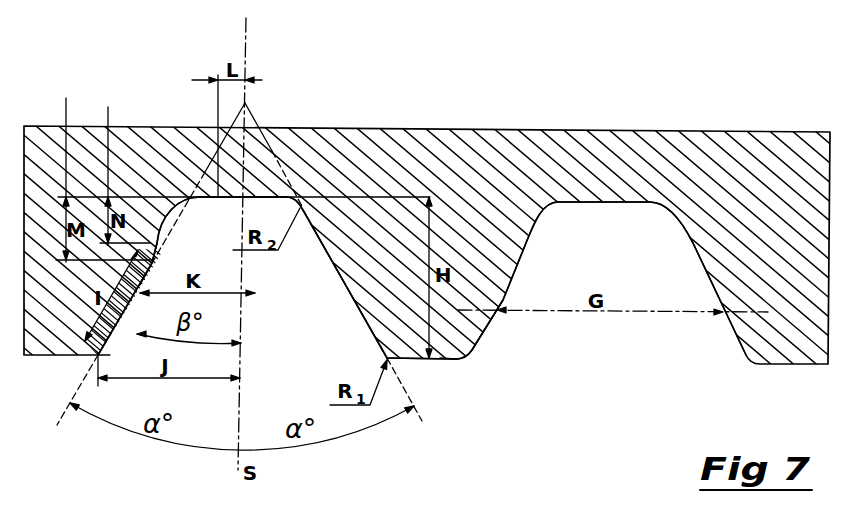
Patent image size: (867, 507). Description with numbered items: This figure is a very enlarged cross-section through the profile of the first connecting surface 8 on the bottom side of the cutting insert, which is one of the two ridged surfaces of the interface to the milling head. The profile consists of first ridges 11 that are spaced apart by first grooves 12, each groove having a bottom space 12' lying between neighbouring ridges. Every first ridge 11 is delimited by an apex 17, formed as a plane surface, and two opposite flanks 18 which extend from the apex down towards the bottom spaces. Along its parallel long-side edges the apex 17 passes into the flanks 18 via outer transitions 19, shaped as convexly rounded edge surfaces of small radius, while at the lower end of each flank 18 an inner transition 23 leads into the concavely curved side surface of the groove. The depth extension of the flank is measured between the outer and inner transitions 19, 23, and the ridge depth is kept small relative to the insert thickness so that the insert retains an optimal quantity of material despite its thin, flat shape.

The first connecting surface 8 is at (768, 376).
The first ridge 11 is at (468, 333).
The first groove 12 is at (381, 312).
The bottom space 12' is at (609, 208).
The apex 17 is at (440, 360).
The flank 18 is at (340, 284).
The outer transition 19 is at (100, 356).
The inner transition 23 is at (155, 265).